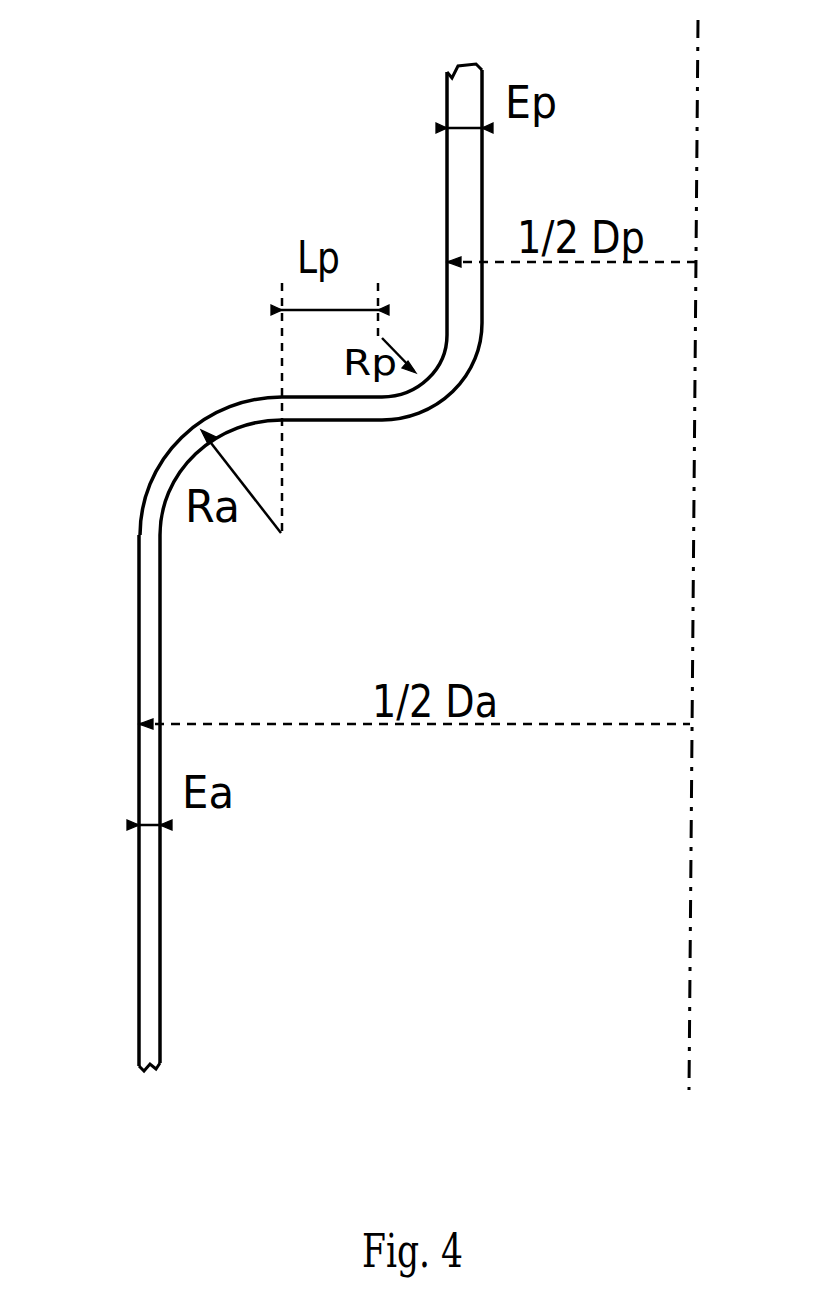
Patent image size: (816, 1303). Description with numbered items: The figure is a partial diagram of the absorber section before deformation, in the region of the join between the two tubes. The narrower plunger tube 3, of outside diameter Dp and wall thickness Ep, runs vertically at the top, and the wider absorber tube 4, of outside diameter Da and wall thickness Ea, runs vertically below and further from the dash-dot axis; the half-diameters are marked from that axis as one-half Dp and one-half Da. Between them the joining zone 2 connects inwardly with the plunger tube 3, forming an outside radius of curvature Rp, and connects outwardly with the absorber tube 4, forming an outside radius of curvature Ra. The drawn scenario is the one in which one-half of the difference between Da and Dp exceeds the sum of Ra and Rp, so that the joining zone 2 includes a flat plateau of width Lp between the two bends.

The joining zone 2 is at (322, 408).
The plunger tube 3 is at (452, 93).
The absorber tube 4 is at (143, 965).